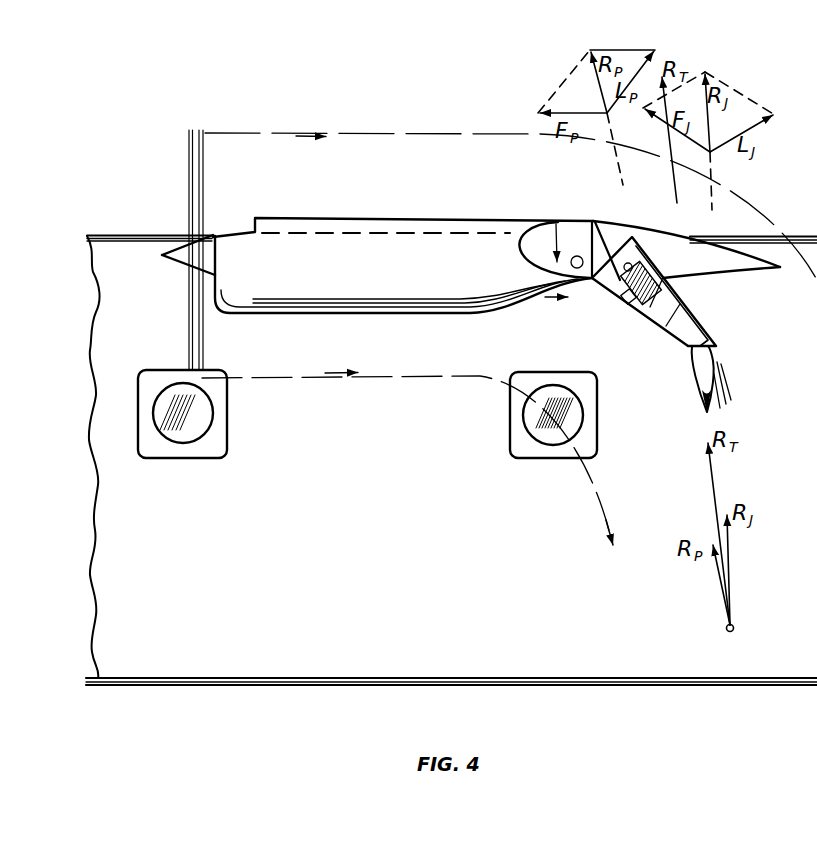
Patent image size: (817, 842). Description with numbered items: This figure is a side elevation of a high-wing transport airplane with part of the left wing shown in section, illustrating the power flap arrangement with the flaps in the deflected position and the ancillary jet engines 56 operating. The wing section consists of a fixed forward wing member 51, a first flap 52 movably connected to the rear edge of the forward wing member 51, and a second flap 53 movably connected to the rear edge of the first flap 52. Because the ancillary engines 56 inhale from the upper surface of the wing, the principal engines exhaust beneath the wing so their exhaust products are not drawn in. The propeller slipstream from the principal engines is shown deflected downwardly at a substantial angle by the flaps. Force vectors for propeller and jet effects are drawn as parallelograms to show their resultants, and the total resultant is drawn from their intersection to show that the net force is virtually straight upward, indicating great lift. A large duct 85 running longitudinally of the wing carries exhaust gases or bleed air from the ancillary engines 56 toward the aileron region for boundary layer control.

The fixed forward wing member 51 is at (593, 221).
The first flap 52 is at (650, 322).
The second flap 53 is at (697, 371).
The ancillary jet engines 56 is at (692, 299).
The duct 85 is at (577, 268).